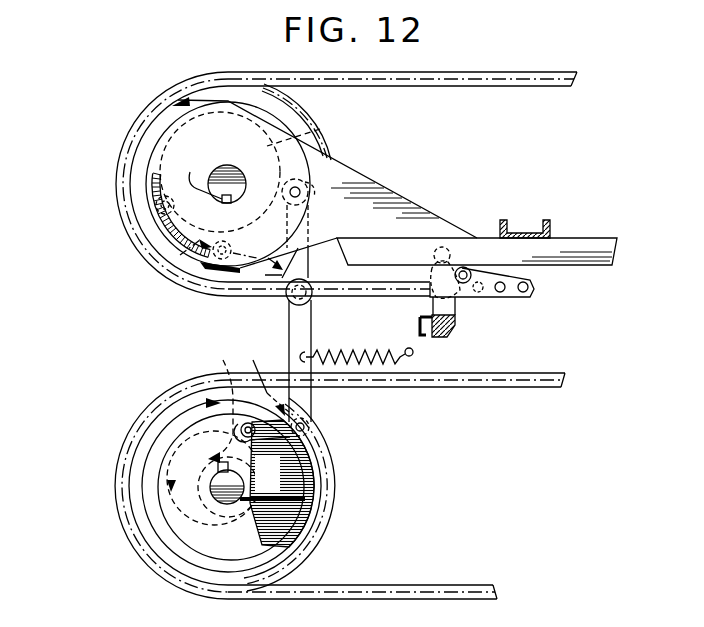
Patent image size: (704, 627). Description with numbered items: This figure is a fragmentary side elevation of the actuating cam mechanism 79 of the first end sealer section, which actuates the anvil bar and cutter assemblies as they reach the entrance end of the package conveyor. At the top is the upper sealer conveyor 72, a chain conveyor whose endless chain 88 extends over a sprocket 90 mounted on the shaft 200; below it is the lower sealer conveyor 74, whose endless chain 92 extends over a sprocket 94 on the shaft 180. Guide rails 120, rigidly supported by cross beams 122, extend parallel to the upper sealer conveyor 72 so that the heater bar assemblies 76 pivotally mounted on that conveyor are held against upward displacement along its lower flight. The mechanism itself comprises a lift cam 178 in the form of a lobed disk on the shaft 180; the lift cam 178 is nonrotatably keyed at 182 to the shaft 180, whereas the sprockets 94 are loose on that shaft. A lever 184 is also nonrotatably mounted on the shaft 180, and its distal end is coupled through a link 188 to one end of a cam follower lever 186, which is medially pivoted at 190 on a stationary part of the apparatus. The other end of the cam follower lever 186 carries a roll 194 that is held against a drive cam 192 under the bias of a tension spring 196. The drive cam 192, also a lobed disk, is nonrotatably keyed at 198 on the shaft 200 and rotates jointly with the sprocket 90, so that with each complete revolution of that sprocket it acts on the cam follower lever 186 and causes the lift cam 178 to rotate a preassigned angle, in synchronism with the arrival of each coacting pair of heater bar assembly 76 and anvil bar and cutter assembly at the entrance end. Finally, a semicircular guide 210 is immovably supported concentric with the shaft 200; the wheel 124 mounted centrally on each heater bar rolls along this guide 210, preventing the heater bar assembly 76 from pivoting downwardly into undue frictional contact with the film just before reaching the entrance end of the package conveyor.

The upper sealer conveyor 72 is at (140, 104).
The lower sealer conveyor 74 is at (100, 512).
The heater bar assembly 76 is at (453, 325).
The actuating cam mechanism 79 is at (103, 148).
The endless chain 88 is at (510, 84).
The sprocket 90 is at (307, 108).
The endless chain 92 is at (430, 585).
The sprocket 94 is at (318, 536).
The guide rail 120 is at (585, 238).
The cross beam 122 is at (543, 220).
The wheel 124 is at (197, 262).
The lift cam 178 is at (320, 448).
The shaft 180 is at (221, 498).
The key 182 is at (218, 467).
The lever 184 is at (204, 404).
The cam follower lever 186 is at (303, 323).
The link 188 is at (265, 380).
The pivot 190 is at (290, 301).
The drive cam 192 is at (320, 130).
The roll 194 is at (312, 200).
The tension spring 196 is at (360, 348).
The key 198 is at (195, 176).
The shaft 200 is at (226, 165).
The semicircular guide 210 is at (150, 175).